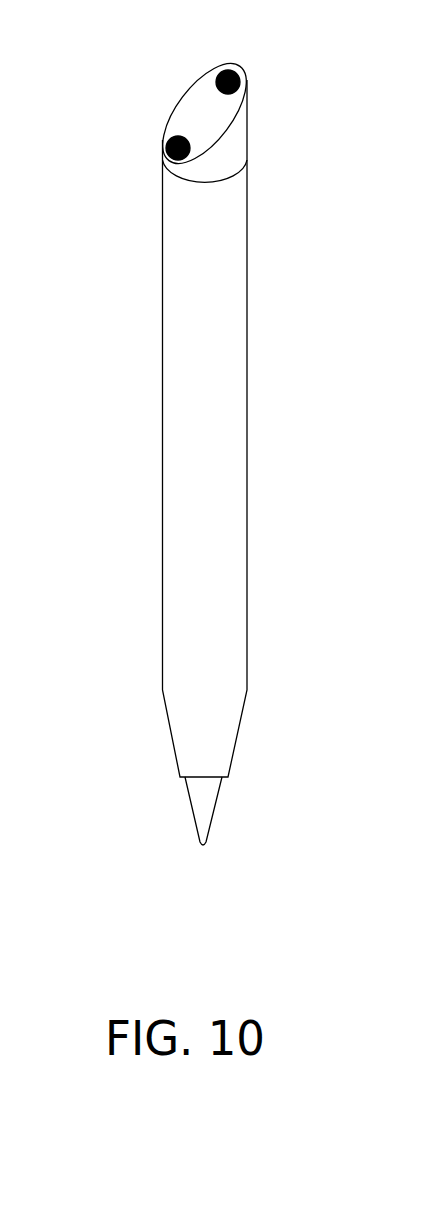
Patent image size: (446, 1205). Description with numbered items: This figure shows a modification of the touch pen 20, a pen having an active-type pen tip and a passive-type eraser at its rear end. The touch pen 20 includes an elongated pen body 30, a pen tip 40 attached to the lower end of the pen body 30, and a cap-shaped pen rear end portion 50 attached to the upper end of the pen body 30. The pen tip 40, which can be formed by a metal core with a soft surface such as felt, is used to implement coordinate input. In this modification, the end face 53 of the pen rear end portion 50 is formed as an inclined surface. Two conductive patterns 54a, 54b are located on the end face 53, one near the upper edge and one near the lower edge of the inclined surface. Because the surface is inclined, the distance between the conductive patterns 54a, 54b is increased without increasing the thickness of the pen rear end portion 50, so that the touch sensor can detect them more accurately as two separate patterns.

The touch pen 20 is at (186, 425).
The pen body 30 is at (163, 372).
The pen tip 40 is at (207, 795).
The pen rear end portion 50 is at (206, 93).
The end face 53 is at (187, 105).
The conductive pattern 54a is at (170, 138).
The conductive pattern 54b is at (218, 75).